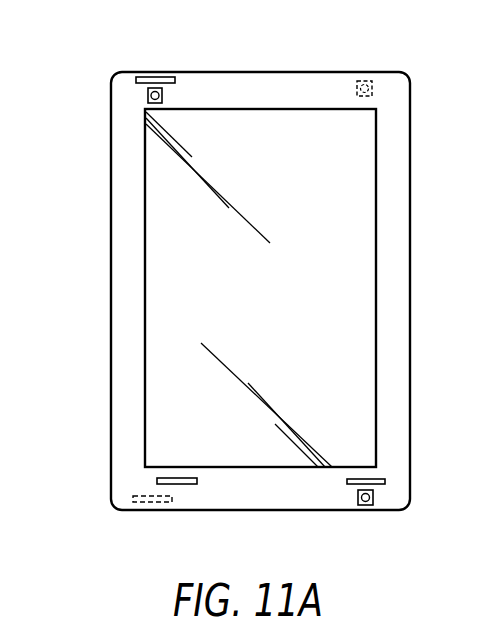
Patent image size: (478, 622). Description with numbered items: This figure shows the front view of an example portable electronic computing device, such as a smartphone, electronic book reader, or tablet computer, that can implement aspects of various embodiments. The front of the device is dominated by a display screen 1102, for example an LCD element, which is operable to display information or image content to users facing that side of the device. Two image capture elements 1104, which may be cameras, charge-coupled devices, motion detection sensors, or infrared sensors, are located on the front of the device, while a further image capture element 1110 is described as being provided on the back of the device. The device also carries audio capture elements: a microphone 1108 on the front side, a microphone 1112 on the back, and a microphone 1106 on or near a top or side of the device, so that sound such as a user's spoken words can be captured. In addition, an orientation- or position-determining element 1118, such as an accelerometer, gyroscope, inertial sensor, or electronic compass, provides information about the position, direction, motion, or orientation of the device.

The display screen 1102 is at (145, 343).
The image capture element 1104 is at (148, 96).
The microphone 1106 is at (163, 77).
The microphone 1108 is at (386, 481).
The image capture element 1110 is at (362, 82).
The microphone 1112 is at (185, 485).
The orientation- or position-determining element 1118 is at (152, 503).